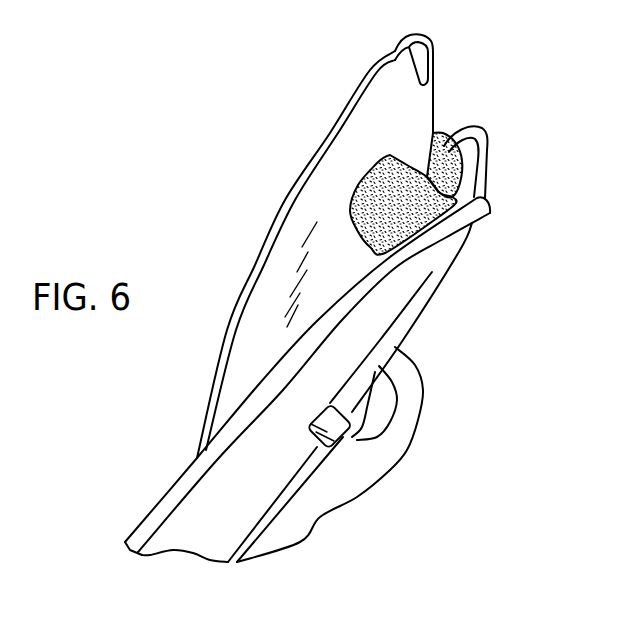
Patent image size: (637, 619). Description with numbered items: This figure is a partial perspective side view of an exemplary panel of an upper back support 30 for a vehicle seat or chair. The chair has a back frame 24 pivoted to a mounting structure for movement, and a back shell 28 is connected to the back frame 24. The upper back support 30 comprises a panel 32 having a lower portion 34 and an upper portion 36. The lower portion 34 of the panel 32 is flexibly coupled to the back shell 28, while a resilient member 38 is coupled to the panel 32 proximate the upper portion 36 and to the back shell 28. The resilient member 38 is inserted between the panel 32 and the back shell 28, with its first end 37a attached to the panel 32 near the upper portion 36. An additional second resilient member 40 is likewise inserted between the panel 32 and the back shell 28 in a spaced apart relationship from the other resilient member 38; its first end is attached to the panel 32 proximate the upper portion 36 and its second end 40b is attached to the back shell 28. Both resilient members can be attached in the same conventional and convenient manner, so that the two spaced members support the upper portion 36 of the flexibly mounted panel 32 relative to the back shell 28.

The back frame 24 is at (407, 408).
The back shell 28 is at (418, 295).
The upper back support 30 is at (366, 70).
The panel 32 is at (336, 130).
The lower portion 34 is at (178, 453).
The upper portion 36 is at (446, 77).
The first end 37a is at (362, 181).
The resilient member 38 is at (433, 220).
The second resilient member 40 is at (442, 137).
The second end 40b is at (462, 167).